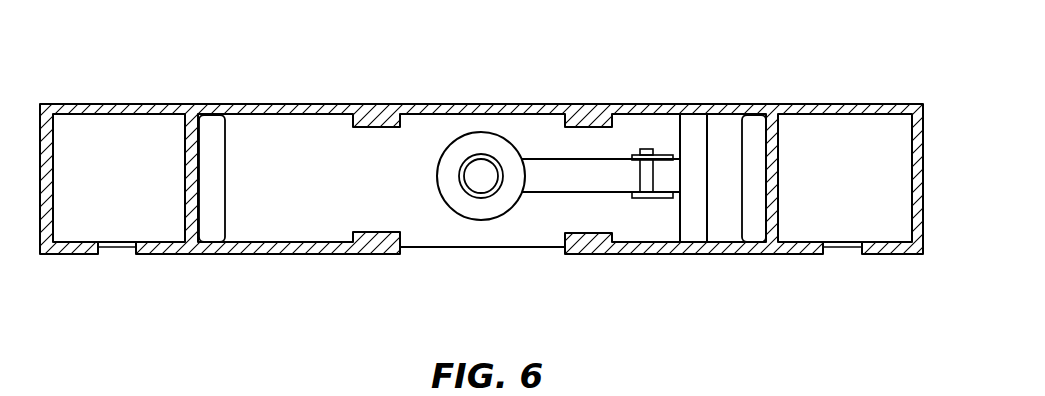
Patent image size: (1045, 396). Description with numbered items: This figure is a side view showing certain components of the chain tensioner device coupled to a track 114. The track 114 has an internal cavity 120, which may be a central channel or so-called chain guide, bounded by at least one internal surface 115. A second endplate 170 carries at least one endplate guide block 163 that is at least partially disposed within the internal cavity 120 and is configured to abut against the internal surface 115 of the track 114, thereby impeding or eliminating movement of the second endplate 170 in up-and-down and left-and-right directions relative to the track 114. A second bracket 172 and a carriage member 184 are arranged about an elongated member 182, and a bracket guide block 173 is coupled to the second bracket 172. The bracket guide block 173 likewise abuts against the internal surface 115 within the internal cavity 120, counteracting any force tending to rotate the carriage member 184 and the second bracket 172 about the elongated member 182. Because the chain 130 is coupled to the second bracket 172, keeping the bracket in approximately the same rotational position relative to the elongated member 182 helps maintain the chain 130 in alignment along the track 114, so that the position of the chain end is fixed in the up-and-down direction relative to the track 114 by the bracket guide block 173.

The track 114 is at (421, 110).
The internal surface 115 is at (263, 122).
The internal cavity 120 is at (410, 207).
The chain 130 is at (638, 178).
The endplate guide block 163 is at (213, 128).
The second endplate 170 is at (117, 249).
The second bracket 172 is at (587, 170).
The bracket guide block 173 is at (696, 142).
The elongated member 182 is at (479, 166).
The carriage member 184 is at (507, 152).